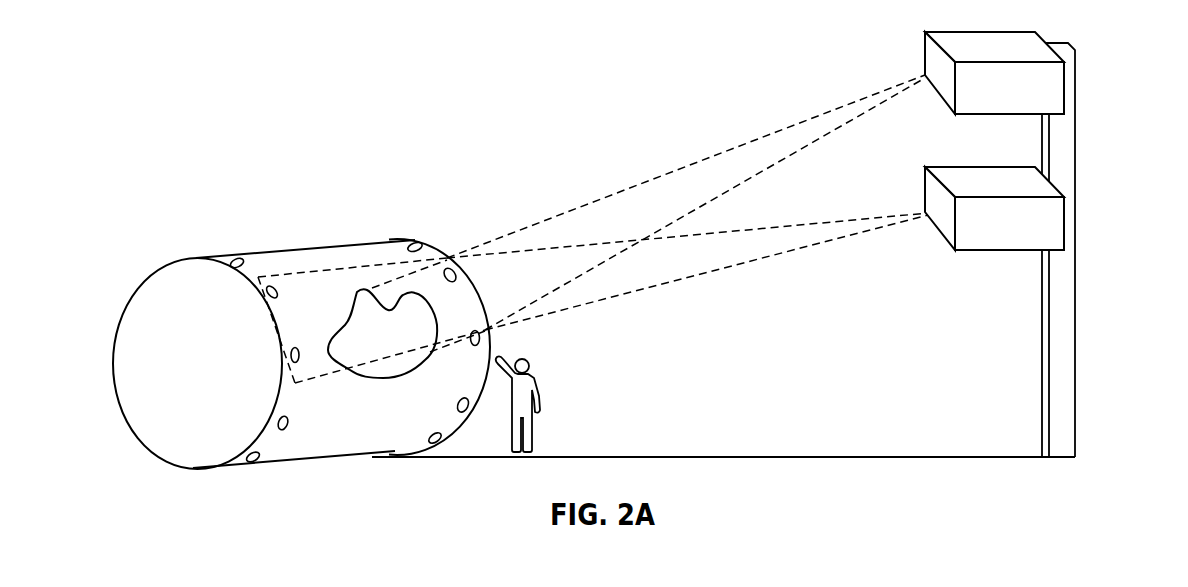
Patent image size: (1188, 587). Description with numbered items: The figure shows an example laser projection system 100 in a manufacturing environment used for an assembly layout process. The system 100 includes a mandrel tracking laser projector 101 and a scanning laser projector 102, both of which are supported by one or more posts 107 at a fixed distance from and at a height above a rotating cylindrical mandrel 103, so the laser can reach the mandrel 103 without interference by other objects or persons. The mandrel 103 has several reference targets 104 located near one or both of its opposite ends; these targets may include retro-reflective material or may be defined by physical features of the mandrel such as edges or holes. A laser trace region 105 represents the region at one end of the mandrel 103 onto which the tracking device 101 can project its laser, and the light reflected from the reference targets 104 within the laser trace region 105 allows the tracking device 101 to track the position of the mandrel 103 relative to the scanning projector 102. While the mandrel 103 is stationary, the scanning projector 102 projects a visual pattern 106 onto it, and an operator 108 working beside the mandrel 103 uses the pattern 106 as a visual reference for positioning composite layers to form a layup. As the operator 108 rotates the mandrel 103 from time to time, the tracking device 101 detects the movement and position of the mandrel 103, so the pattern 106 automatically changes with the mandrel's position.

The laser projection system 100 is at (547, 121).
The mandrel tracking laser projector 101 is at (1033, 224).
The scanning laser projector 102 is at (1033, 89).
The rotating cylindrical mandrel 103 is at (241, 242).
The reference targets 104 is at (229, 268).
The laser trace region 105 is at (278, 323).
The visual pattern 106 is at (389, 305).
The posts 107 is at (1058, 348).
The operator 108 is at (546, 424).